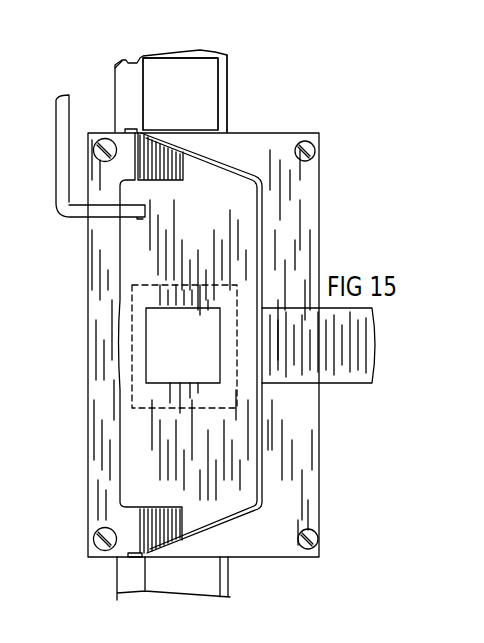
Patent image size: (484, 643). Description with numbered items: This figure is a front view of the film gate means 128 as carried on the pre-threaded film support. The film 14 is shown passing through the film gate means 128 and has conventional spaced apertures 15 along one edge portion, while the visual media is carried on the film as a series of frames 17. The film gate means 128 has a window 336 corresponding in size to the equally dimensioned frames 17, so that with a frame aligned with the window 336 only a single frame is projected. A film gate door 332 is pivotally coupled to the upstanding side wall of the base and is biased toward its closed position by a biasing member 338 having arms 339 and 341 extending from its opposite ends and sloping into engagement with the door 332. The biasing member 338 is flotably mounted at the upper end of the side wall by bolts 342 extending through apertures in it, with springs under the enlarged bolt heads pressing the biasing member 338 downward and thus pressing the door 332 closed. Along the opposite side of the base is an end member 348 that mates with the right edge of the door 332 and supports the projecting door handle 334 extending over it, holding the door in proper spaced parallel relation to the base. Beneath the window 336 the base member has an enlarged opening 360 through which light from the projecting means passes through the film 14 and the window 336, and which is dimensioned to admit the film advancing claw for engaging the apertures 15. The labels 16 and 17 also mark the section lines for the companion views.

The film 14 is at (228, 87).
The spaced apertures 15 is at (131, 58).
The section line 16 is at (362, 42).
The frames 17 is at (197, 60).
The film gate means 128 is at (337, 252).
The film gate door 332 is at (230, 466).
The door handle 334 is at (374, 345).
The window 336 is at (193, 353).
The biasing member 338 is at (93, 405).
The arm 339 is at (163, 510).
The arm 341 is at (180, 181).
The bolts 342 is at (100, 552).
The end member 348 is at (313, 200).
The enlarged opening 360 is at (236, 291).